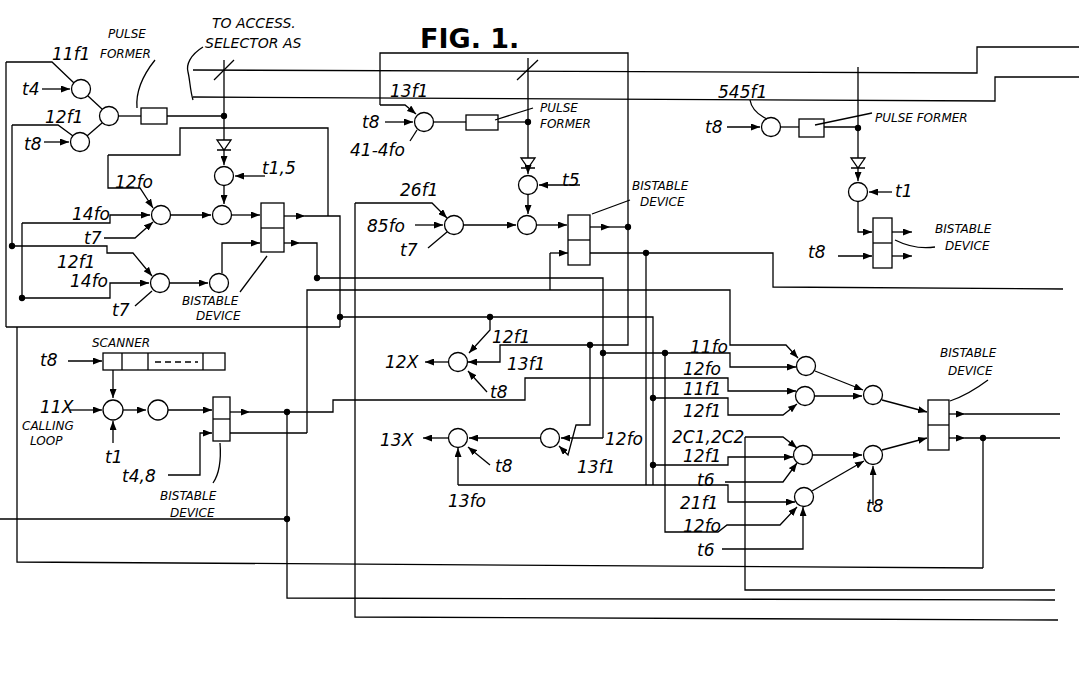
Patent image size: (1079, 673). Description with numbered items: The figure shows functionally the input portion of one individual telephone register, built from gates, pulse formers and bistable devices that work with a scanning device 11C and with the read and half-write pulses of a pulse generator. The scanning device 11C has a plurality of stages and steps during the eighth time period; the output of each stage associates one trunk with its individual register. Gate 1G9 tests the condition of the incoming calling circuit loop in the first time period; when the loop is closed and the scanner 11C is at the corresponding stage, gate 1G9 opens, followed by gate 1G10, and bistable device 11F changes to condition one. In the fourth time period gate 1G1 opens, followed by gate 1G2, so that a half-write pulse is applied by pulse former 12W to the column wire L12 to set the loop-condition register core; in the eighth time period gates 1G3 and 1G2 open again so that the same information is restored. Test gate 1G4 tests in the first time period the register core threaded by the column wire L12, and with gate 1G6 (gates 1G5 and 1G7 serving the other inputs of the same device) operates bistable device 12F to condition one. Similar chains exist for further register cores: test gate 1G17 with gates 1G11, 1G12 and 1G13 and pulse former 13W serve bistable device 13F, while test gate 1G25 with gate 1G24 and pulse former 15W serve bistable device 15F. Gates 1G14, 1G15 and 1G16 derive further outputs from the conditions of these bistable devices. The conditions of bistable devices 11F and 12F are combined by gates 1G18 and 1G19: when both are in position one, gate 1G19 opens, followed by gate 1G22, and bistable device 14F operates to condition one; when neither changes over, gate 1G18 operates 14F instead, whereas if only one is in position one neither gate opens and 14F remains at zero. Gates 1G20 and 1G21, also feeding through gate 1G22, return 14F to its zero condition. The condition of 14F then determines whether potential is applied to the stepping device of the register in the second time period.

The gate 1G1 is at (106, 84).
The gate 1G2 is at (114, 120).
The gate 1G3 is at (69, 153).
The test gate 1G4 is at (210, 182).
The gate 1G5 is at (182, 206).
The gate 1G6 is at (220, 224).
The gate 1G7 is at (206, 268).
The gate 1G9 is at (131, 400).
The gate 1G10 is at (181, 400).
The gate 1G11 is at (445, 134).
The gate 1G12 is at (478, 238).
The gate 1G13 is at (532, 236).
The gate 1G14 is at (448, 353).
The gate 1G15 is at (468, 427).
The gate 1G16 is at (527, 427).
The test gate 1G17 is at (509, 194).
The gate 1G18 is at (830, 361).
The gate 1G19 is at (829, 405).
The gate 1G20 is at (828, 449).
The gate 1G21 is at (830, 494).
The gate 1G22 is at (897, 418).
The gate 1G24 is at (780, 140).
The test gate 1G25 is at (833, 207).
The pulse former 12W is at (184, 105).
The pulse former 13W is at (498, 113).
The pulse former 15W is at (830, 118).
The bistable device 11F is at (233, 410).
The bistable device 12F is at (277, 217).
The bistable device 13F is at (598, 229).
The bistable device 14F is at (994, 418).
The bistable device 15F is at (905, 238).
The scanning device 11C is at (185, 341).
The column wire L12 is at (244, 112).